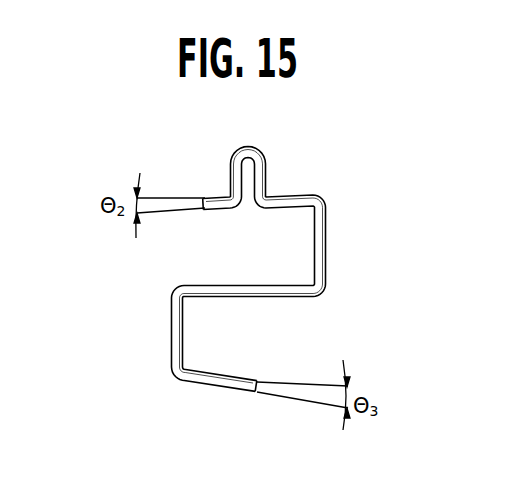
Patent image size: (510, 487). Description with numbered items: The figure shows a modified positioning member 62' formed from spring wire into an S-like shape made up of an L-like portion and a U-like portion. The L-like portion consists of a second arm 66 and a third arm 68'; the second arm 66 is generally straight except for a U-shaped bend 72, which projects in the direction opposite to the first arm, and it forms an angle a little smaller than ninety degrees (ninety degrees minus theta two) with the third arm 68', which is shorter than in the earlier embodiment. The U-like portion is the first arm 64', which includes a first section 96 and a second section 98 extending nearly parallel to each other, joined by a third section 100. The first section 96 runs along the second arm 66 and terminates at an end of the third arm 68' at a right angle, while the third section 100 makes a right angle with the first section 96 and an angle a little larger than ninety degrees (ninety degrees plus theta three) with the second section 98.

The positioning member 62' is at (319, 222).
The first arm 64' is at (163, 342).
The second arm 66 is at (302, 196).
The third arm 68' is at (358, 247).
The U-shaped bend 72 is at (250, 152).
The first section 96 is at (240, 295).
The second section 98 is at (240, 395).
The third section 100 is at (182, 315).